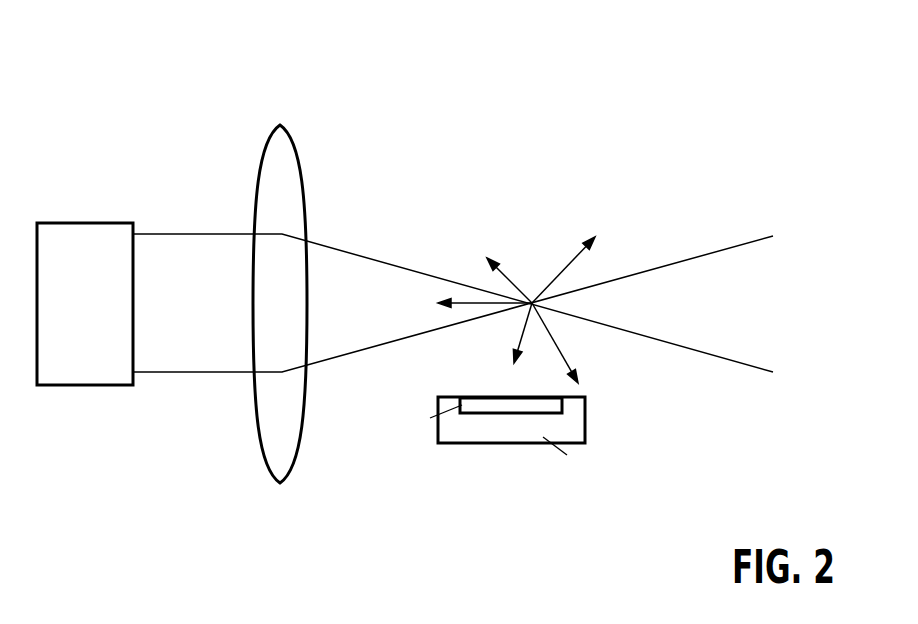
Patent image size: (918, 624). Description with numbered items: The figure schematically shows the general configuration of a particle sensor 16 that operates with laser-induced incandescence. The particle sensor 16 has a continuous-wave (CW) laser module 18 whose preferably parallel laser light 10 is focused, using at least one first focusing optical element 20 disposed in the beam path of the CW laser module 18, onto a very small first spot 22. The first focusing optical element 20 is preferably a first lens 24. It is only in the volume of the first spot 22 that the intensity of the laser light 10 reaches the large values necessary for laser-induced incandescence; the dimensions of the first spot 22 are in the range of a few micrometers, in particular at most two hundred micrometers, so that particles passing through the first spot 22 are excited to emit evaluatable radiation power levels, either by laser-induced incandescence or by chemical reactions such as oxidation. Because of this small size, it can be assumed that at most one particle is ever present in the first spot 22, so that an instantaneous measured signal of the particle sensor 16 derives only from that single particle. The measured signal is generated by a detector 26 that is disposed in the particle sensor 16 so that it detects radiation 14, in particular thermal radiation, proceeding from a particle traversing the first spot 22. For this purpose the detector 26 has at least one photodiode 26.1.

The laser light 10 is at (178, 273).
The radiation 14 is at (473, 303).
The particle sensor 16 is at (540, 231).
The continuous-wave (CW) laser module 18 is at (82, 387).
The first focusing optical element 20 is at (329, 259).
The first spot 22 is at (536, 278).
The first lens 24 is at (278, 190).
The detector 26 is at (498, 453).
The photodiode 26.1 is at (510, 403).